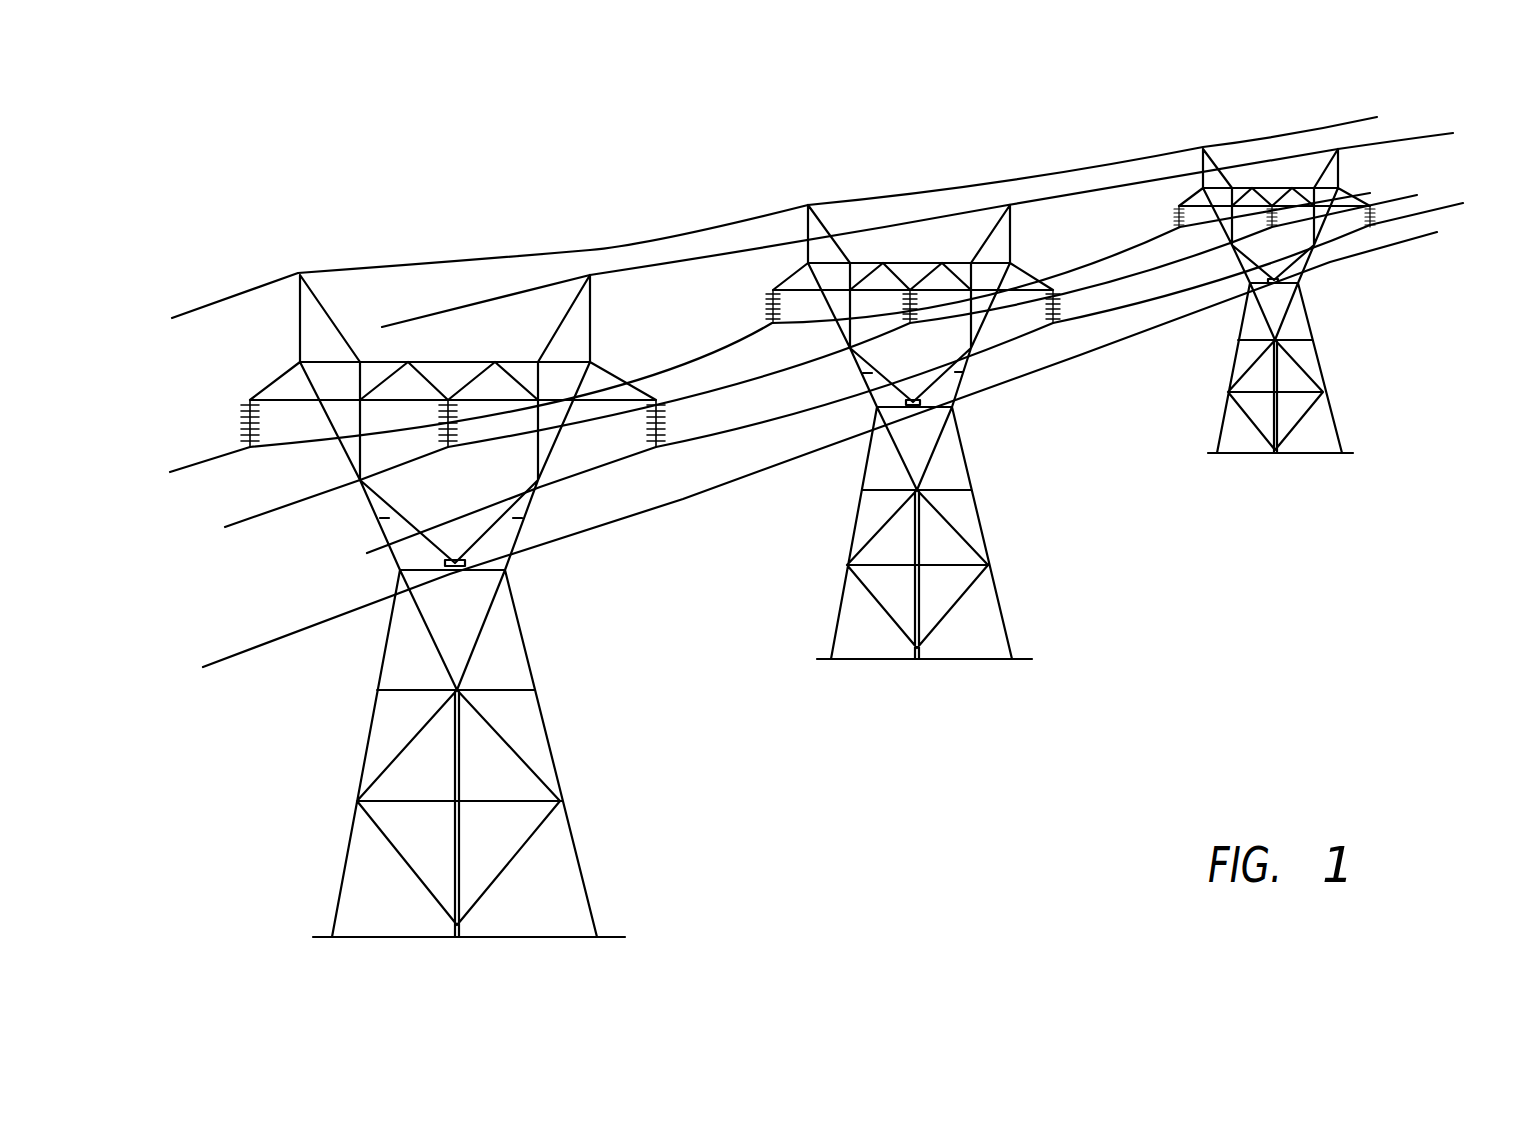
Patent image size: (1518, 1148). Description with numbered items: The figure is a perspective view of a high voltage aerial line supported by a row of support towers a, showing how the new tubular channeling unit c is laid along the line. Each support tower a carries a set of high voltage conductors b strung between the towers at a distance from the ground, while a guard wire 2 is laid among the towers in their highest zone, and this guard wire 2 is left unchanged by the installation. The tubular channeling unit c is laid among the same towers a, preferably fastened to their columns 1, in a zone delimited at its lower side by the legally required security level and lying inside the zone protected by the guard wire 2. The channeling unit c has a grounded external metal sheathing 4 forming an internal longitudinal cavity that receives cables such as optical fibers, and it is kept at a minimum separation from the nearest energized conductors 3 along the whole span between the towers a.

The column 1 is at (538, 654).
The guard wire 2 is at (828, 208).
The energized conductors 3 is at (809, 382).
The grounded external metal sheathing 4 is at (653, 519).
The support tower a is at (771, 597).
The high voltage conductors b is at (316, 478).
The tubular channeling unit c is at (829, 438).